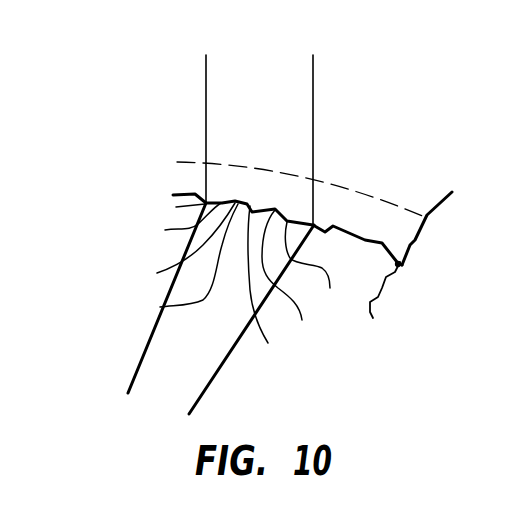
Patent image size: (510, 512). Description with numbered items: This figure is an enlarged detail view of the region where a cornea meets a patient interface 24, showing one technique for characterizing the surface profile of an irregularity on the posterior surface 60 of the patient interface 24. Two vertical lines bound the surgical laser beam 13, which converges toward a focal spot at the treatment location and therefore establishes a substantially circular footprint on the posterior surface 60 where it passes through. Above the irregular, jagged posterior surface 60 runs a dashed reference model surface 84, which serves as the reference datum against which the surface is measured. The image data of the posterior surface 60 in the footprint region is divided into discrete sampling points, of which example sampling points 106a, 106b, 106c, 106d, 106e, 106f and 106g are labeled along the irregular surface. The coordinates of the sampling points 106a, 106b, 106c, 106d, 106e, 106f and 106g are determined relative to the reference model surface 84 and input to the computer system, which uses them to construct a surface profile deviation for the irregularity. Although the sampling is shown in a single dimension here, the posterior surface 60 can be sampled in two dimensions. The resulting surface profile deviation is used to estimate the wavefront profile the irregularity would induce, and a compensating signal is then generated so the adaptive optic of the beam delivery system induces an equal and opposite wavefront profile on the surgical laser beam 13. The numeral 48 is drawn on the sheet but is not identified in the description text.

The surgical laser beam 13 is at (273, 118).
The patient interface 24 is at (395, 162).
The rough fractured boundary surface 48 is at (373, 272).
The posterior surface 60 is at (397, 268).
The reference model surface 84 is at (188, 162).
The sampling point 106a is at (176, 207).
The sampling point 106b is at (165, 230).
The sampling point 106c is at (157, 273).
The sampling point 106d is at (160, 307).
The sampling point 106e is at (280, 290).
The sampling point 106f is at (300, 276).
The sampling point 106g is at (323, 266).